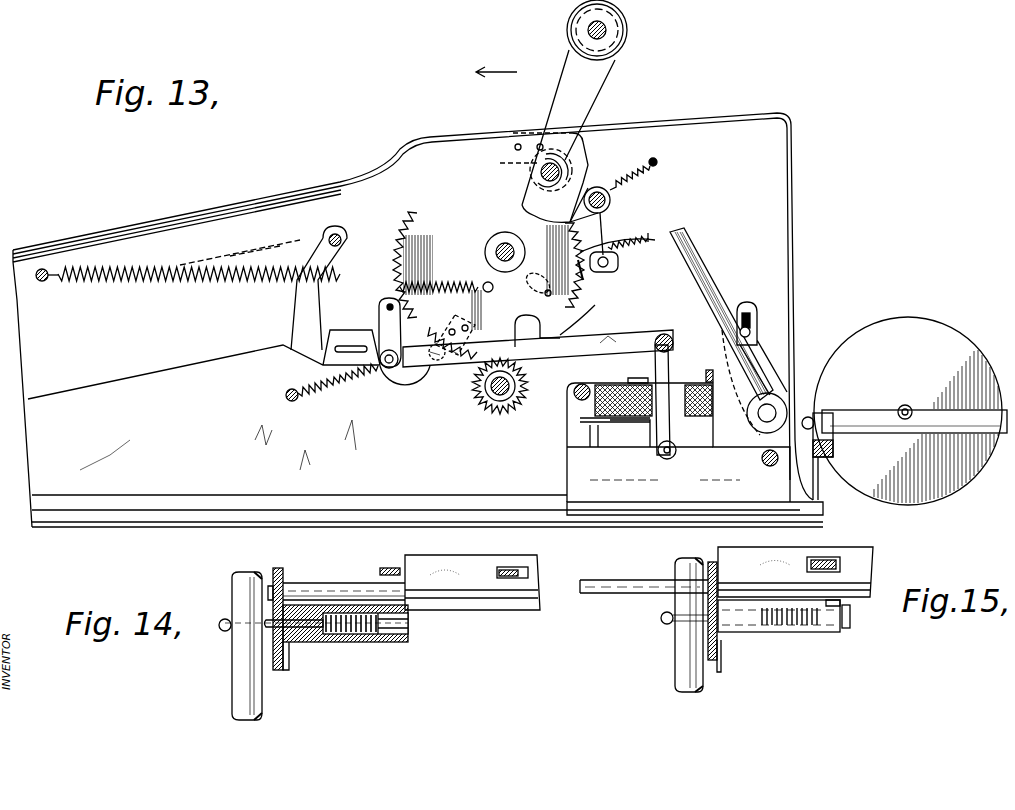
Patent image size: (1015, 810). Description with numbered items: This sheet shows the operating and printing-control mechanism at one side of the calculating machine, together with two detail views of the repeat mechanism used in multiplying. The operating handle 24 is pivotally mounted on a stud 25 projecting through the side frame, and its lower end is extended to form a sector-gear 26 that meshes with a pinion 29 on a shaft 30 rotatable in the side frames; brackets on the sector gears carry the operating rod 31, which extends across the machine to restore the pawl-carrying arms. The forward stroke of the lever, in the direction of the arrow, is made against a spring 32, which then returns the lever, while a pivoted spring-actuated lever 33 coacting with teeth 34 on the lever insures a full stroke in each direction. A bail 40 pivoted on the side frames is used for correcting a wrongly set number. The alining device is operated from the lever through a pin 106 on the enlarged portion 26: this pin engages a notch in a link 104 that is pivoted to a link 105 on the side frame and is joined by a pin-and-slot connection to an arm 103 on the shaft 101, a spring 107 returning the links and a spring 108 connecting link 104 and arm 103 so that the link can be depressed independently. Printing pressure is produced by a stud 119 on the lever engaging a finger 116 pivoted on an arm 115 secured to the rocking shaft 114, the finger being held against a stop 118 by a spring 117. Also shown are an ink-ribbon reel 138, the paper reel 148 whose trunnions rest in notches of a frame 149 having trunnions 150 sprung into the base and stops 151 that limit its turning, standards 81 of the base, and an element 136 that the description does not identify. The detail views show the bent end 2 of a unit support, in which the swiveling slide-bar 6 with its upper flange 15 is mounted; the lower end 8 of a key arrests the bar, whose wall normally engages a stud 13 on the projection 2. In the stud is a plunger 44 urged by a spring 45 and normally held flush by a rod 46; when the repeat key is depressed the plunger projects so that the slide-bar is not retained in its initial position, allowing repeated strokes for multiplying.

In FIG. 13, the operating handle 24 is at (552, 111).
In FIG. 13, the stud 25 is at (497, 250).
In FIG. 13, the sector-gear 26 is at (488, 285).
In FIG. 13, the pinion 29 is at (493, 410).
In FIG. 13, the shaft 30 is at (518, 396).
In FIG. 13, the operating rod 31 is at (437, 342).
In FIG. 13, the spring 32 is at (172, 285).
In FIG. 13, the pivoted spring-actuated lever 33 is at (612, 212).
In FIG. 13, the teeth 34 is at (574, 320).
In FIG. 13, the bail 40 is at (283, 345).
In FIG. 13, the standards 81 is at (695, 446).
In FIG. 13, the shaft 101 is at (667, 460).
In FIG. 13, the arm 103 is at (672, 428).
In FIG. 13, the link 104 is at (562, 358).
In FIG. 13, the link 105 is at (380, 318).
In FIG. 13, the pin 106 is at (537, 331).
In FIG. 13, the spring 107 is at (334, 384).
In FIG. 13, the spring 108 is at (673, 342).
In FIG. 13, the shaft 114 is at (772, 333).
In FIG. 13, the arm 115 is at (705, 300).
In FIG. 13, the finger 116 is at (585, 280).
In FIG. 13, the spring 117 is at (650, 236).
In FIG. 13, the stop 118 is at (618, 262).
In FIG. 13, the stud 119 is at (548, 289).
In FIG. 13, the roller 136 is at (712, 390).
In FIG. 13, the reel 138 is at (615, 392).
In FIG. 13, the reel 148 is at (908, 411).
In FIG. 13, the frame 149 is at (870, 420).
In FIG. 13, the trunnions 150 is at (808, 417).
In FIG. 13, the stops 151 is at (826, 460).
In FIG. 14, the bent end of support 2 is at (281, 672).
In FIG. 15, the bent end of support 2 is at (721, 624).
In FIG. 14, the swiveling slide-bar 6 is at (337, 595).
In FIG. 15, the swiveling slide-bar 6 is at (612, 592).
In FIG. 14, the lower end of key 8 is at (520, 567).
In FIG. 15, the lower end of key 8 is at (835, 562).
In FIG. 14, the stud 13 is at (350, 643).
In FIG. 15, the stud 13 is at (770, 634).
In FIG. 14, the flange 15 is at (512, 610).
In FIG. 15, the flange 15 is at (878, 590).
In FIG. 14, the plunger 44 is at (408, 630).
In FIG. 15, the plunger 44 is at (850, 624).
In FIG. 14, the spring 45 is at (370, 634).
In FIG. 15, the spring 45 is at (812, 628).
In FIG. 14, the rod 46 is at (232, 682).
In FIG. 15, the rod 46 is at (680, 665).